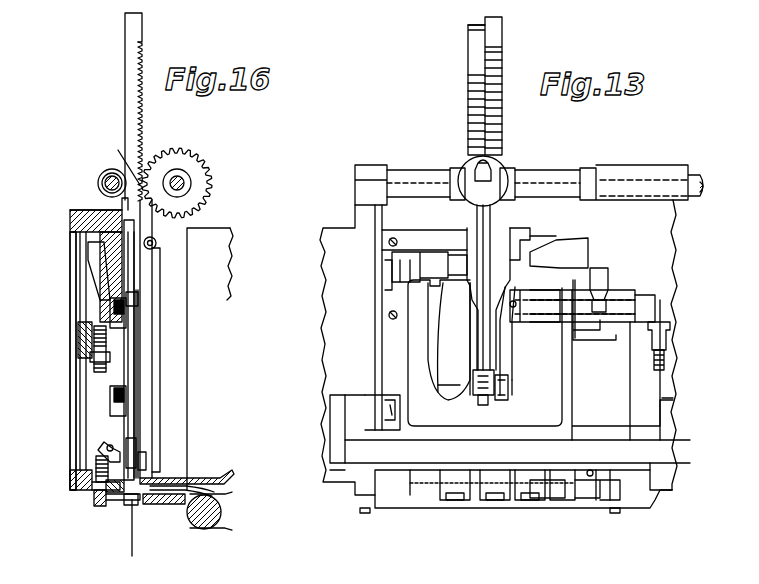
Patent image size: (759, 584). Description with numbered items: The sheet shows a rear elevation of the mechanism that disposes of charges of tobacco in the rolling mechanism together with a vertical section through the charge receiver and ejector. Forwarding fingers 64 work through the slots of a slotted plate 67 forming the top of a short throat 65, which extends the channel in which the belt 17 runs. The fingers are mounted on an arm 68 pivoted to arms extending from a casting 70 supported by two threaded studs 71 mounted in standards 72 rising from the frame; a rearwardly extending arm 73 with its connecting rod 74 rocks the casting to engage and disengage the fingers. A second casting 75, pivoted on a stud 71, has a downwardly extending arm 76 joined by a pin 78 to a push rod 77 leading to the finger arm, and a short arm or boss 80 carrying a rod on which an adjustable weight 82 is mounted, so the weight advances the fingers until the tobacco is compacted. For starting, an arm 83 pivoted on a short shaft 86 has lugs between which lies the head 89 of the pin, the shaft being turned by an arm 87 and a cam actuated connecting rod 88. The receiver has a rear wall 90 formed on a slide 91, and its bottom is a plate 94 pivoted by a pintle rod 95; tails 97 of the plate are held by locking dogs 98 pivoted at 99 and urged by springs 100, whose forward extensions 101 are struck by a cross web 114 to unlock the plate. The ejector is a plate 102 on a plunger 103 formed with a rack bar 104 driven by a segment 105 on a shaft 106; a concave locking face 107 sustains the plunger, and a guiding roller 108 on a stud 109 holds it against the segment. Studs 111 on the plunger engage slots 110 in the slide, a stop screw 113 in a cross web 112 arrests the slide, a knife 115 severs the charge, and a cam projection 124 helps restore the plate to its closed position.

In FIG. 16, the rack bar 104 is at (125, 79).
In FIG. 16, the segment 105 is at (212, 182).
In FIG. 16, the shaft 106 is at (180, 180).
In FIG. 13, the shaft 106 is at (556, 192).
In FIG. 16, the locking face 107 is at (112, 163).
In FIG. 16, the guiding roller 108 is at (105, 184).
In FIG. 16, the stud 109 is at (103, 175).
In FIG. 16, the slide 91 is at (102, 271).
In FIG. 16, the slots 110 is at (110, 320).
In FIG. 16, the studs 111 is at (110, 305).
In FIG. 16, the cross web 112 is at (78, 336).
In FIG. 16, the stop screw 113 is at (94, 372).
In FIG. 16, the knife 115 is at (142, 350).
In FIG. 16, the plunger 103 is at (134, 400).
In FIG. 16, the cross web 114 is at (134, 455).
In FIG. 16, the forward extensions 101 is at (140, 460).
In FIG. 16, the pivot 99 is at (108, 444).
In FIG. 13, the pivot 99 is at (483, 12).
In FIG. 16, the springs 100 is at (96, 462).
In FIG. 16, the tails 97 is at (100, 506).
In FIG. 16, the pintle rod 95 is at (116, 494).
In FIG. 16, the plate 94 is at (128, 500).
In FIG. 16, the plate 102 is at (136, 503).
In FIG. 16, the rear wall 90 is at (134, 540).
In FIG. 16, the slotted plate 67 is at (190, 478).
In FIG. 13, the slotted plate 67 is at (428, 483).
In FIG. 16, the throat 65 is at (180, 494).
In FIG. 13, the throat 65 is at (550, 498).
In FIG. 16, the belt 17 is at (210, 530).
In FIG. 13, the cam projection 124 is at (499, 79).
In FIG. 13, the locking dogs 98 is at (369, 102).
In FIG. 13, the adjustable weight 82 is at (494, 168).
In FIG. 13, the threaded studs 71 is at (385, 262).
In FIG. 13, the casting 70 is at (434, 256).
In FIG. 13, the casting 75 is at (488, 287).
In FIG. 13, the arm or boss 80 is at (512, 225).
In FIG. 13, the rearwardly extending arm 73 is at (559, 252).
In FIG. 13, the connecting rod 74 is at (600, 310).
In FIG. 13, the standards 72 is at (486, 341).
In FIG. 13, the downwardly extending arm 76 is at (478, 324).
In FIG. 13, the arm 68 is at (462, 376).
In FIG. 13, the arm 83 is at (505, 362).
In FIG. 13, the pin 78 is at (478, 384).
In FIG. 13, the push rod 77 is at (483, 400).
In FIG. 13, the head 89 is at (505, 385).
In FIG. 13, the short shaft 86 is at (586, 330).
In FIG. 13, the arm 87 is at (662, 312).
In FIG. 13, the connecting rod 88 is at (668, 368).
In FIG. 13, the forwarding fingers 64 is at (515, 500).